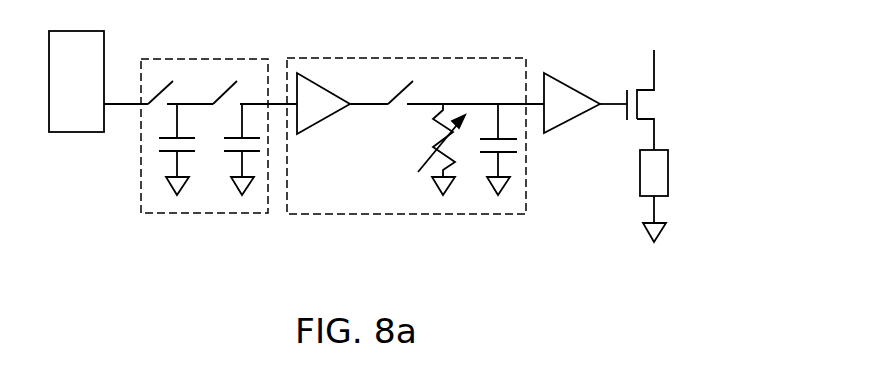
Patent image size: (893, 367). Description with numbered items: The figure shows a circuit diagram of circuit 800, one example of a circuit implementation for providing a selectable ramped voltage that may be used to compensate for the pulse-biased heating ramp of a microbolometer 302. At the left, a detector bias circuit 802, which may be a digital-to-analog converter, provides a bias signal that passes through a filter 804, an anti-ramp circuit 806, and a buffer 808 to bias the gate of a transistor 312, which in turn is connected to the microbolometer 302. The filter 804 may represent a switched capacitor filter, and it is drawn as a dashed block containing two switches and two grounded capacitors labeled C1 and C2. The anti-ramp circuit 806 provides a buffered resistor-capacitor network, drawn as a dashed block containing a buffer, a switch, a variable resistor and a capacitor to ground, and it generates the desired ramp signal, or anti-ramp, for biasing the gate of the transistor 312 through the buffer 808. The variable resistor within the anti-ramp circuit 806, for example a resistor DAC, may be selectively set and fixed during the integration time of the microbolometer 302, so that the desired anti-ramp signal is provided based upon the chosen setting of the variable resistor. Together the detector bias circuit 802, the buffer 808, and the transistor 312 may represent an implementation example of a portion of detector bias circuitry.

The circuit 800 is at (399, 162).
The detector bias circuit 802 is at (85, 132).
The filter 804 is at (204, 167).
The anti-ramp circuit 806 is at (345, 213).
The buffer 808 is at (572, 123).
The transistor 312 is at (653, 102).
The microbolometer 302 is at (668, 170).
The capacitor C1 is at (169, 149).
The capacitor C2 is at (234, 149).